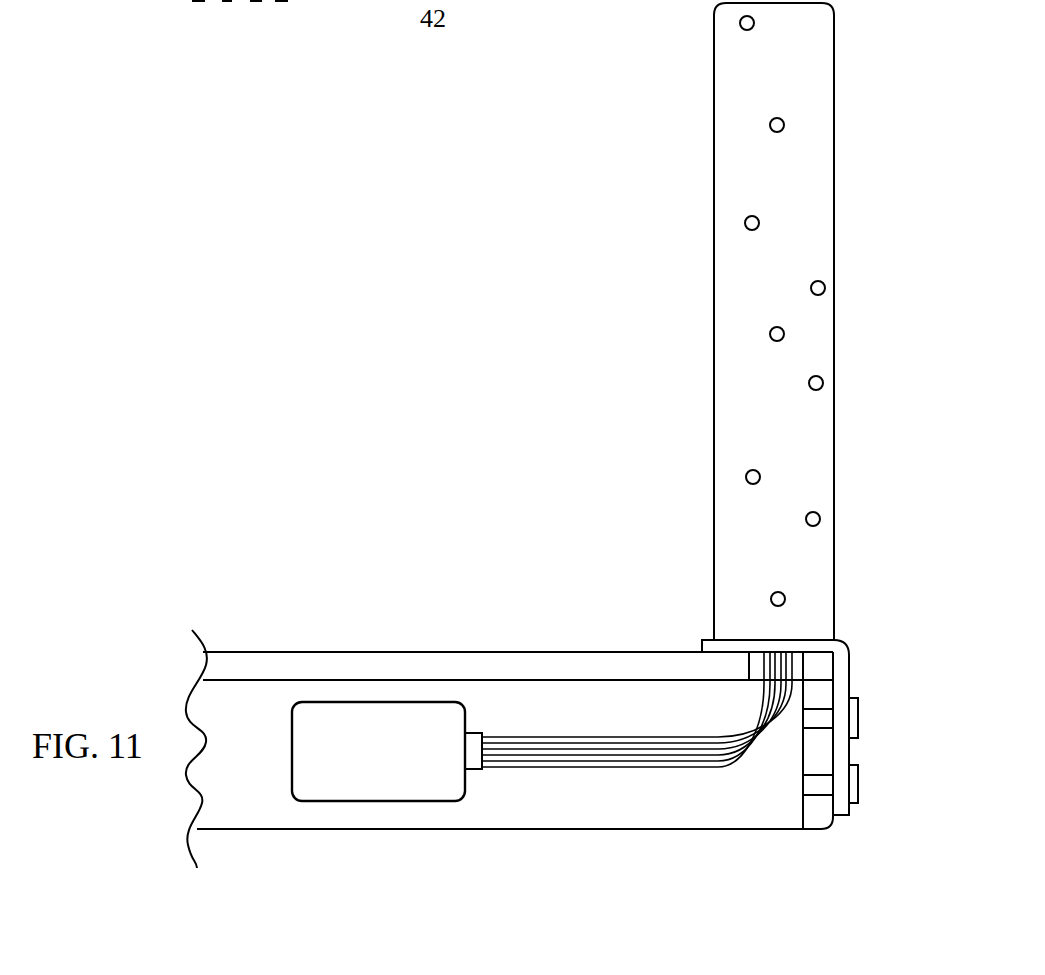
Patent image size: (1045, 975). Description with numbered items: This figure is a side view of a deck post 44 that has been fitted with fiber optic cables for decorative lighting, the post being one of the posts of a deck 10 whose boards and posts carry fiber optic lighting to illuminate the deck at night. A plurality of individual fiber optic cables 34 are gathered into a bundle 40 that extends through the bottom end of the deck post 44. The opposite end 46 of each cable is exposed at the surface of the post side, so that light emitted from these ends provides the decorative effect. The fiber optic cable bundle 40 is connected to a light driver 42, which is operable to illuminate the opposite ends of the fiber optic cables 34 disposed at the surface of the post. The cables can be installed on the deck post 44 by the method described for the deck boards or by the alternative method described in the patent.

The deck 10 is at (260, 424).
The fiber optic cables 34 is at (530, 752).
The bundle 40 is at (723, 763).
The light driver 42 is at (333, 782).
The deck post 44 is at (813, 133).
The opposite end 46 is at (768, 124).